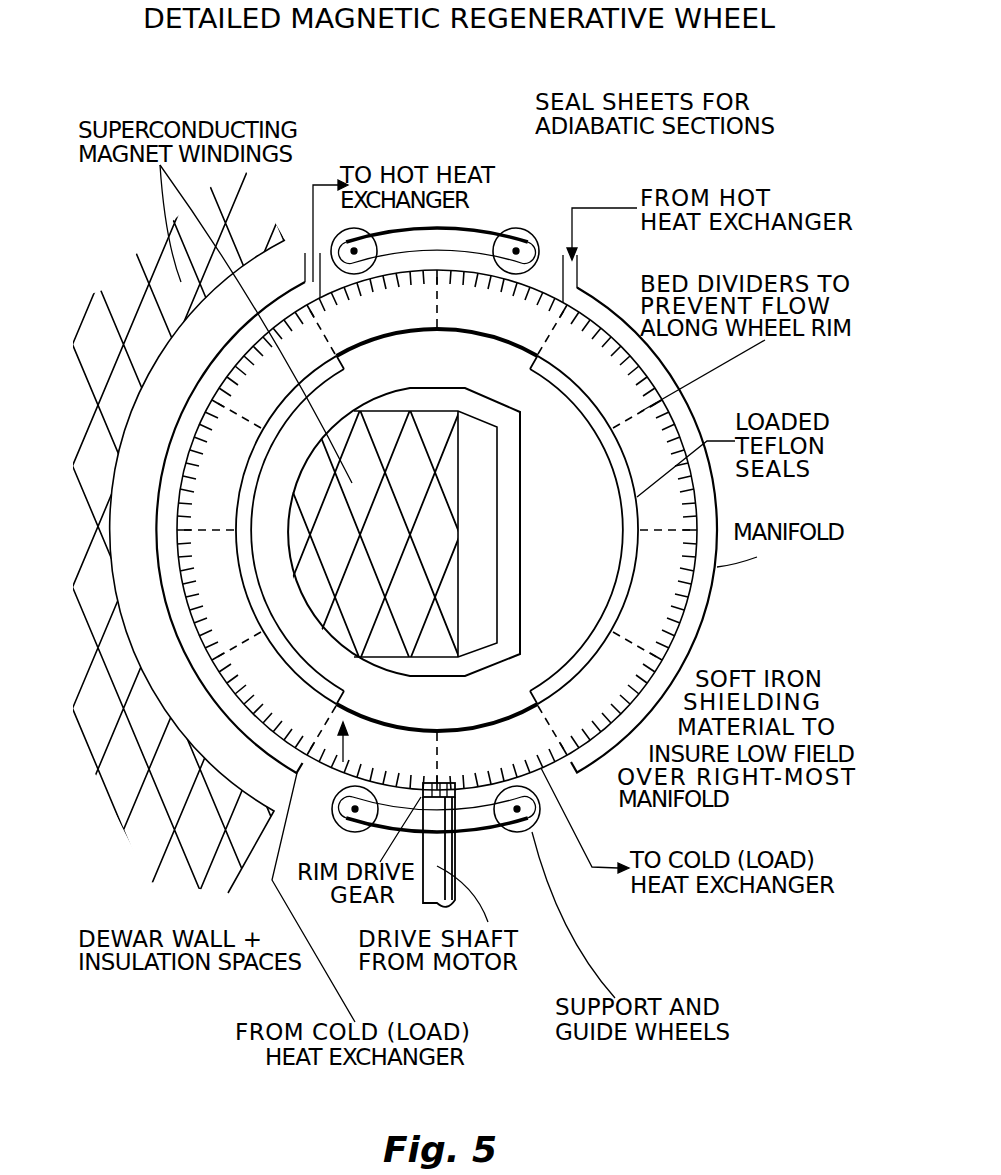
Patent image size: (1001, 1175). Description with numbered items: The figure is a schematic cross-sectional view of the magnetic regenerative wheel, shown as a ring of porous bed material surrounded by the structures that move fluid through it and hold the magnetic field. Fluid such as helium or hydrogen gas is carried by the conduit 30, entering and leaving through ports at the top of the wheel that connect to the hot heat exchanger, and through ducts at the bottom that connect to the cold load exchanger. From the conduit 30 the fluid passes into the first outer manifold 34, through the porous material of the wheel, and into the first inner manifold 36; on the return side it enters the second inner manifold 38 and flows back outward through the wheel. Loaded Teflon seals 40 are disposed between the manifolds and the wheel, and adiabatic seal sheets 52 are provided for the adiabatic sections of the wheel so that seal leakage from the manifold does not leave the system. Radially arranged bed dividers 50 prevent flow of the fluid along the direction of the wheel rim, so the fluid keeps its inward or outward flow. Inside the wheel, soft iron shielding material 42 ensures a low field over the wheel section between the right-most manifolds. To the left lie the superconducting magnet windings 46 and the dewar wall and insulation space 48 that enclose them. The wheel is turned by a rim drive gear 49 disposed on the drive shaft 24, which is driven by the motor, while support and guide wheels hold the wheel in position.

The drive shaft 24 is at (445, 851).
The conduit 30 is at (304, 270).
The first outer manifold 34 is at (767, 604).
The first inner manifold 36 is at (623, 537).
The second inner manifold 38 is at (276, 514).
The loaded Teflon seals 40 is at (213, 374).
The soft iron shielding material 42 is at (508, 568).
The superconducting magnet windings 46 is at (194, 307).
The dewar wall and insulation space 48 is at (153, 598).
The rim drive gear 49 is at (443, 783).
The bed dividers 50 is at (228, 536).
The adiabatic seal sheets 52 is at (447, 328).